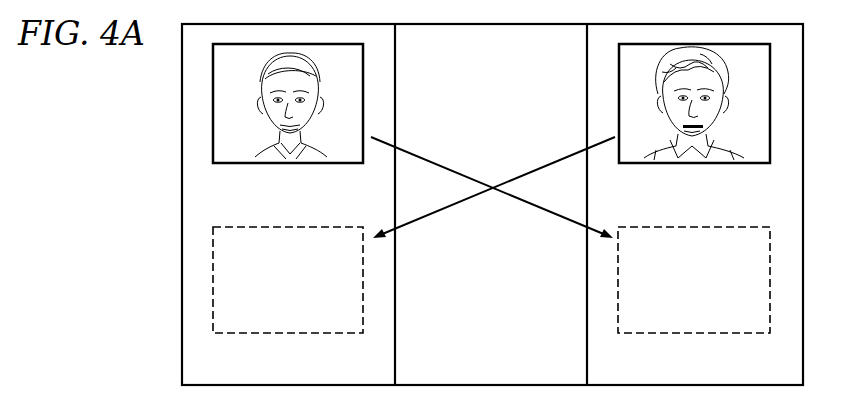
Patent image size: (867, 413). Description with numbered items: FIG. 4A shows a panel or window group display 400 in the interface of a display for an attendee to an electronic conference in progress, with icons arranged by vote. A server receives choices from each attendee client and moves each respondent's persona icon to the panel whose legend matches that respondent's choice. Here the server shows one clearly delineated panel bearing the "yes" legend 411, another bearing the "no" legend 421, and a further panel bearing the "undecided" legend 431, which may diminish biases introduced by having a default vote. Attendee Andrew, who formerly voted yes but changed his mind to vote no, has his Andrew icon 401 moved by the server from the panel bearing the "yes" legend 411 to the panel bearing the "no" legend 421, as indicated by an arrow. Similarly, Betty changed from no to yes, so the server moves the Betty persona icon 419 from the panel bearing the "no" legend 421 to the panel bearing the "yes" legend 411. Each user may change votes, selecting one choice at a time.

The group display 400 is at (176, 196).
The Andrew icon 401 is at (257, 165).
The Betty persona icon 419 is at (722, 163).
The "yes" legend 411 is at (268, 352).
The "undecided" legend 431 is at (489, 337).
The "no" legend 421 is at (712, 355).